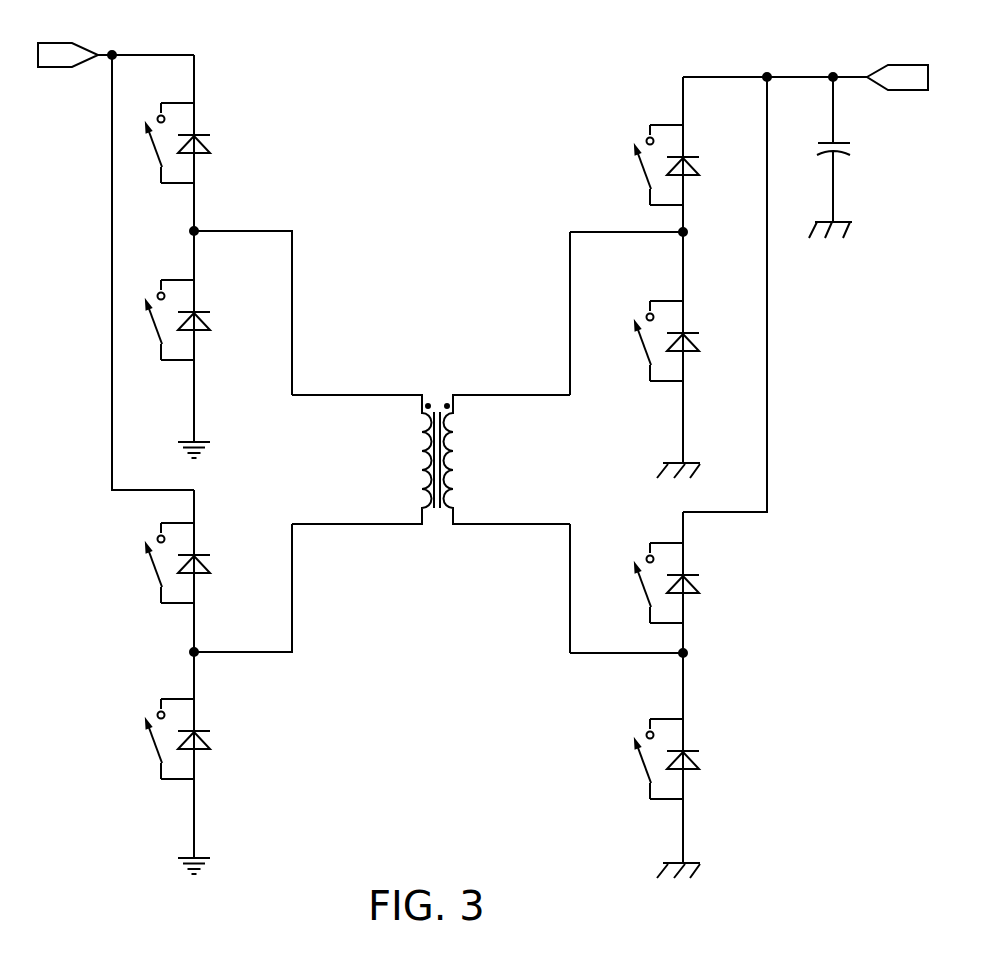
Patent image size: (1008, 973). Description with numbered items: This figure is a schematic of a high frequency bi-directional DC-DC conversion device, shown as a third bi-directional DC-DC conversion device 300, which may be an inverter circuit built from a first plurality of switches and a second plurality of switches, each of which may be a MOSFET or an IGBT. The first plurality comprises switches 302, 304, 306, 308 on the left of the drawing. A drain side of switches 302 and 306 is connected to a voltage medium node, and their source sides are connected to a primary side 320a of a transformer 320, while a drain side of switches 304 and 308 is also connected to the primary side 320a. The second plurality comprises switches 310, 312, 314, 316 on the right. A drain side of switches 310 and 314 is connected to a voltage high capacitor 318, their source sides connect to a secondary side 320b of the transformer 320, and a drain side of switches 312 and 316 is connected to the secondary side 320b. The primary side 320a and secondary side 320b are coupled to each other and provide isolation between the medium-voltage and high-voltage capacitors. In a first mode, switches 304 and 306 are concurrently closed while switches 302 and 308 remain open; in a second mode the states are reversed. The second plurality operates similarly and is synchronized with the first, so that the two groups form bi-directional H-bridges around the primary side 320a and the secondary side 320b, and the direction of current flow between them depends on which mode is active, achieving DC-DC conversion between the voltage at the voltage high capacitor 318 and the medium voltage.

The third bi-directional DC-DC conversion device 300 is at (312, 31).
The switch 302 is at (213, 143).
The switch 304 is at (213, 322).
The switch 306 is at (215, 566).
The switch 308 is at (213, 742).
The switch 310 is at (632, 172).
The switch 312 is at (640, 356).
The switch 314 is at (638, 588).
The switch 316 is at (637, 775).
The voltage high capacitor 318 is at (856, 153).
The transformer 320 is at (431, 396).
The primary side 320a is at (418, 450).
The secondary side 320b is at (460, 451).